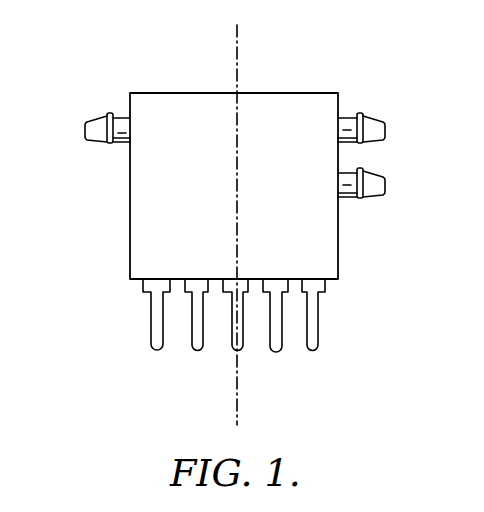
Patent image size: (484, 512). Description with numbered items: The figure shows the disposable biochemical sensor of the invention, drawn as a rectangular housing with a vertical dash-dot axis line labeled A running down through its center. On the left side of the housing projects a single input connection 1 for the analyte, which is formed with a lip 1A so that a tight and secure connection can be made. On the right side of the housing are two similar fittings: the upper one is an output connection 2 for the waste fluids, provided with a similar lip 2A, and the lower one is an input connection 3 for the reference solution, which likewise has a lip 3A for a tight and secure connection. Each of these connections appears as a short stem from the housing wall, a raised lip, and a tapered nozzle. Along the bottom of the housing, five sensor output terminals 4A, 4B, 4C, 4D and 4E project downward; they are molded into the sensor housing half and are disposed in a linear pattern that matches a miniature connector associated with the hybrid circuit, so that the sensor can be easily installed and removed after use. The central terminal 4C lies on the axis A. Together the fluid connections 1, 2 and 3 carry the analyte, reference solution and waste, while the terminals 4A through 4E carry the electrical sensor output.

The axis of symmetry A is at (224, 212).
The input connection 1 is at (83, 137).
The lip 1A is at (106, 143).
The output connection 2 is at (388, 116).
The lip 2A is at (366, 145).
The input connection 3 is at (391, 199).
The lip 3A is at (369, 195).
The sensor output terminal 4A is at (150, 346).
The sensor output terminal 4B is at (194, 350).
The sensor output terminal 4C is at (243, 352).
The sensor output terminal 4D is at (279, 352).
The sensor output terminal 4E is at (316, 344).